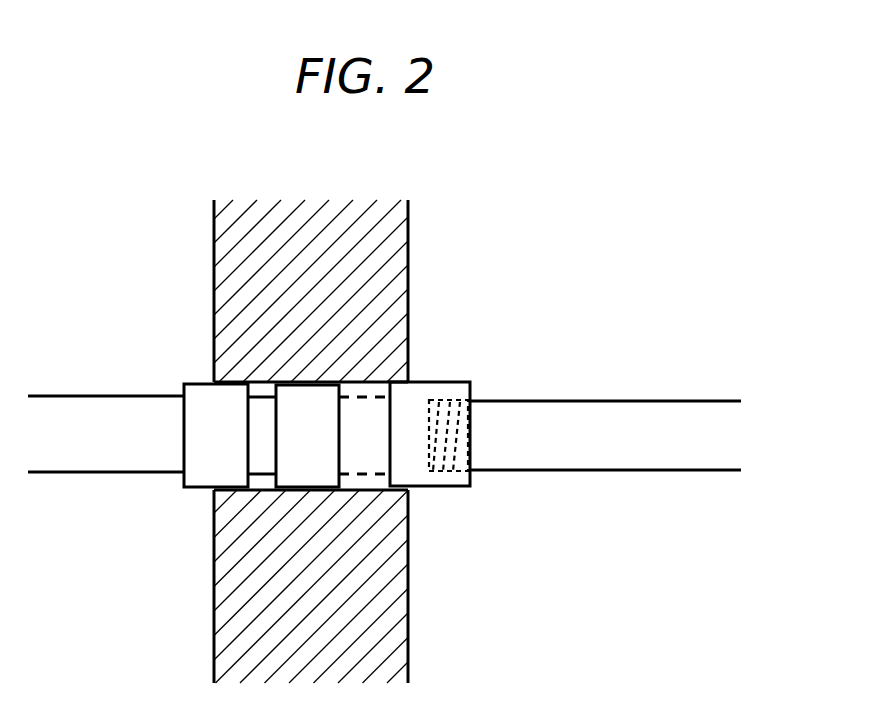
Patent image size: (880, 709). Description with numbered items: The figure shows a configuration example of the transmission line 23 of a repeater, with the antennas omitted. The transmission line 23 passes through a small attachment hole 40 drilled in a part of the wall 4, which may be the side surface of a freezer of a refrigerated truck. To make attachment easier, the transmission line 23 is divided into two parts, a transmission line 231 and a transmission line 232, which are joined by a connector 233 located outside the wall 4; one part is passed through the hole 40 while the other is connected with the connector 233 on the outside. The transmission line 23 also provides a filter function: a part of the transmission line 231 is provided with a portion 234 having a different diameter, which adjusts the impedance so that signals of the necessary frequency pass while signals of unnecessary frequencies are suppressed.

The wall 4 is at (400, 280).
The attachment hole 40 is at (217, 493).
The transmission line 23 is at (500, 327).
The transmission line 231 is at (170, 399).
The transmission line 232 is at (527, 413).
The connector 233 is at (462, 462).
The portion having a different diameter 234 is at (197, 432).